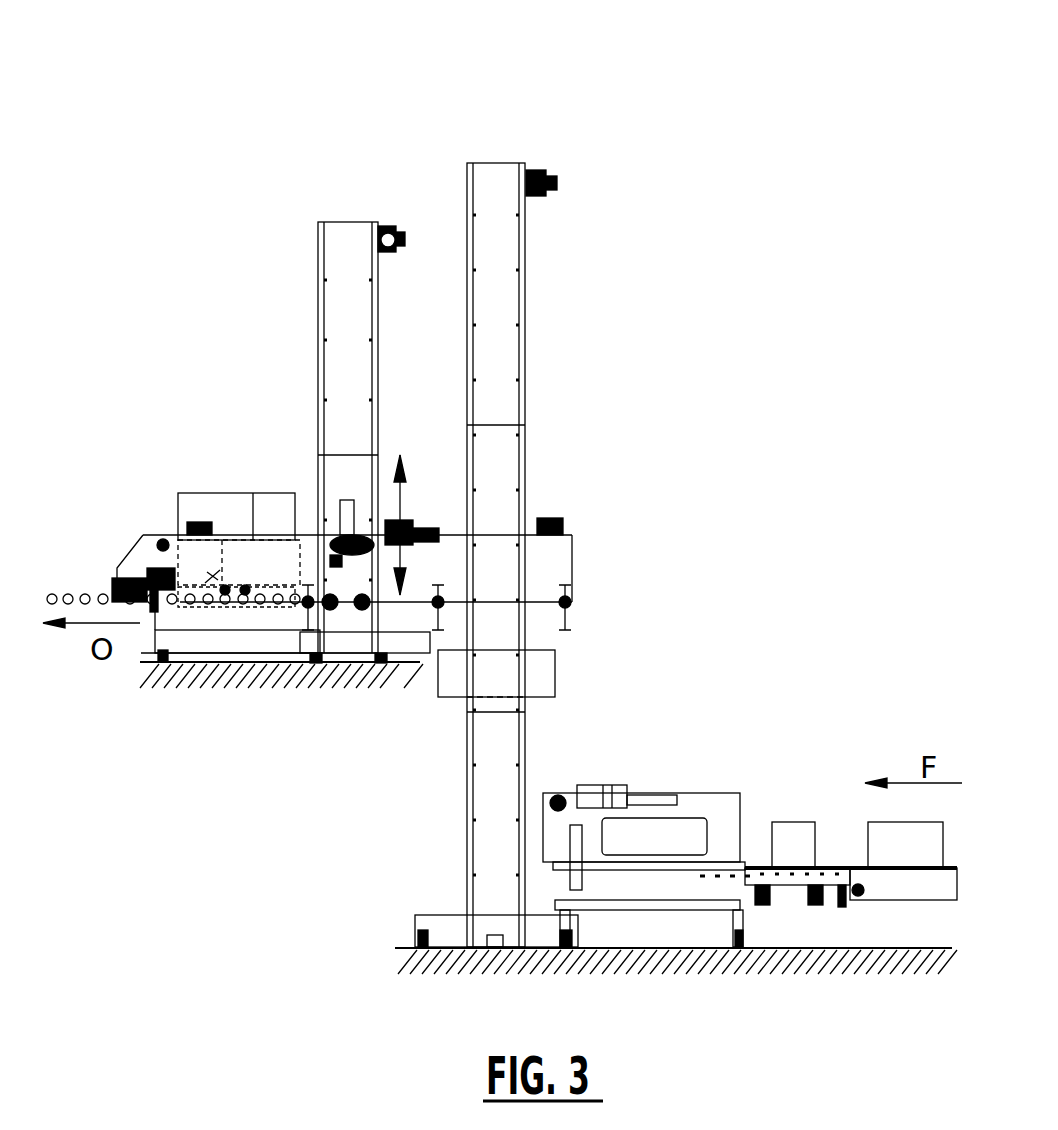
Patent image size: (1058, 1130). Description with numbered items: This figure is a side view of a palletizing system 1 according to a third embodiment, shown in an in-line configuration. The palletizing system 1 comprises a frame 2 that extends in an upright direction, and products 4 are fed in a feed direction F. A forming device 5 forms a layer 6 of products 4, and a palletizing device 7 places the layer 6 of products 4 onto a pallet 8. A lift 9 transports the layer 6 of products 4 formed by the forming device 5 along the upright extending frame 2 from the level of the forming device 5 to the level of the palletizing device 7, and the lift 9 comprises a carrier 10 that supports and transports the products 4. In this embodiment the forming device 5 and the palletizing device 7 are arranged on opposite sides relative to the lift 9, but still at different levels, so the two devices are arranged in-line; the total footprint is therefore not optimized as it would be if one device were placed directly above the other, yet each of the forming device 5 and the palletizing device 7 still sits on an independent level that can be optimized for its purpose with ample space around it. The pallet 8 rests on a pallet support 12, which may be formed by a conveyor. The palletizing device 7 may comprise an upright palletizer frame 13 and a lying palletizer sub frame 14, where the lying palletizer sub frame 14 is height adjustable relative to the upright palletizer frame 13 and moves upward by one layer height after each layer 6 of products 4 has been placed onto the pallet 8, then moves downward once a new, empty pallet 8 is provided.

The palletizing system 1 is at (790, 170).
The frame 2 is at (540, 125).
The products 4 is at (212, 500).
The forming device 5 is at (738, 770).
The layer 6 is at (595, 673).
The palletizing device 7 is at (198, 365).
The pallet 8 is at (262, 590).
The lift 9 is at (497, 470).
The carrier 10 is at (555, 708).
The pallet support 12 is at (215, 640).
The upright palletizer frame 13 is at (355, 395).
The lying palletizer sub frame 14 is at (453, 558).